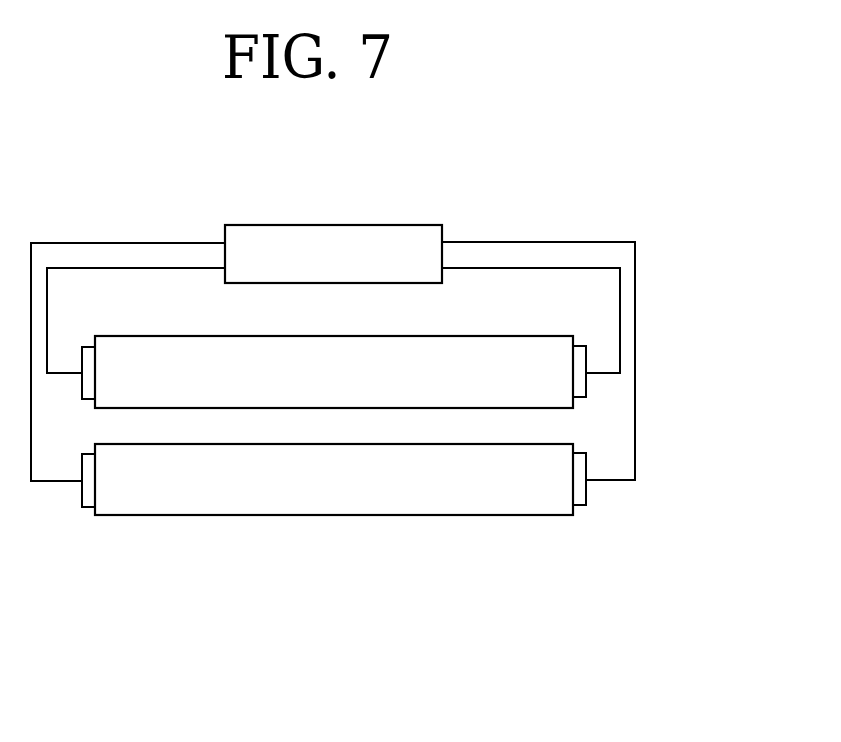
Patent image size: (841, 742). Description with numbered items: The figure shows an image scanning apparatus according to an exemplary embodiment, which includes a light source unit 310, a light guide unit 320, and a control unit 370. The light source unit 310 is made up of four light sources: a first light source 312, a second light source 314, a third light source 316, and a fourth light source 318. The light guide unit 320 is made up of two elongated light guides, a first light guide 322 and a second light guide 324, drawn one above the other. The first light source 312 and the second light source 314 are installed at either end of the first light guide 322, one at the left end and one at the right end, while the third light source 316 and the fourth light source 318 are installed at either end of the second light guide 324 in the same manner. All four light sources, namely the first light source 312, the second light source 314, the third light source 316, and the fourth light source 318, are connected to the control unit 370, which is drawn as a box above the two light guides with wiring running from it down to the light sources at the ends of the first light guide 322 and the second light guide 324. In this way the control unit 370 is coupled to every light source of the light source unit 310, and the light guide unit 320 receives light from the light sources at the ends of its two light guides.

The light source unit 310 is at (334, 531).
The first light source 312 is at (89, 396).
The second light source 314 is at (578, 395).
The third light source 316 is at (86, 500).
The fourth light source 318 is at (582, 500).
The light guide unit 320 is at (441, 360).
The first light guide 322 is at (558, 343).
The second light guide 324 is at (479, 456).
The control unit 370 is at (422, 225).